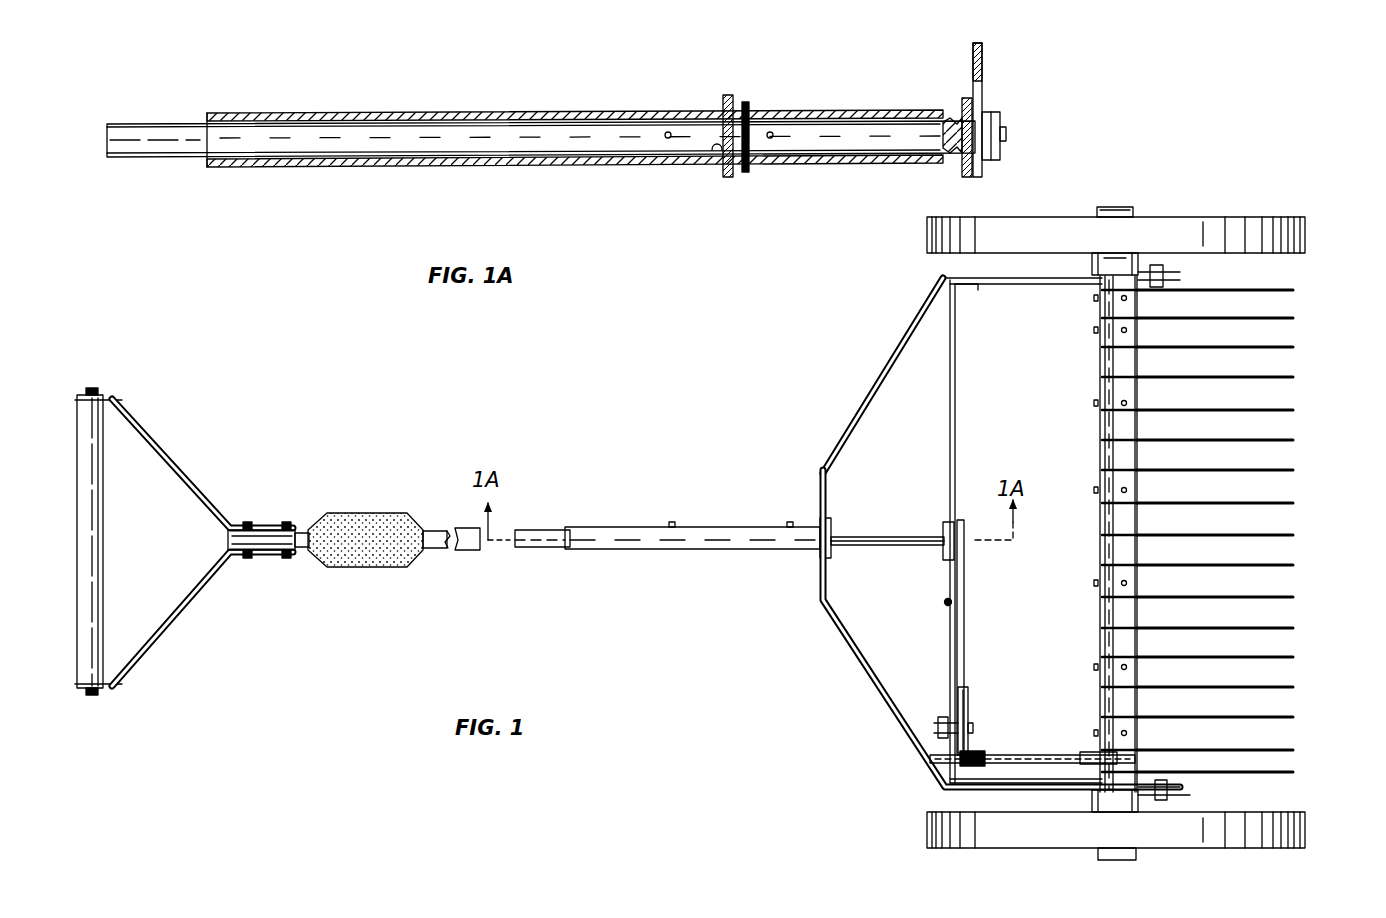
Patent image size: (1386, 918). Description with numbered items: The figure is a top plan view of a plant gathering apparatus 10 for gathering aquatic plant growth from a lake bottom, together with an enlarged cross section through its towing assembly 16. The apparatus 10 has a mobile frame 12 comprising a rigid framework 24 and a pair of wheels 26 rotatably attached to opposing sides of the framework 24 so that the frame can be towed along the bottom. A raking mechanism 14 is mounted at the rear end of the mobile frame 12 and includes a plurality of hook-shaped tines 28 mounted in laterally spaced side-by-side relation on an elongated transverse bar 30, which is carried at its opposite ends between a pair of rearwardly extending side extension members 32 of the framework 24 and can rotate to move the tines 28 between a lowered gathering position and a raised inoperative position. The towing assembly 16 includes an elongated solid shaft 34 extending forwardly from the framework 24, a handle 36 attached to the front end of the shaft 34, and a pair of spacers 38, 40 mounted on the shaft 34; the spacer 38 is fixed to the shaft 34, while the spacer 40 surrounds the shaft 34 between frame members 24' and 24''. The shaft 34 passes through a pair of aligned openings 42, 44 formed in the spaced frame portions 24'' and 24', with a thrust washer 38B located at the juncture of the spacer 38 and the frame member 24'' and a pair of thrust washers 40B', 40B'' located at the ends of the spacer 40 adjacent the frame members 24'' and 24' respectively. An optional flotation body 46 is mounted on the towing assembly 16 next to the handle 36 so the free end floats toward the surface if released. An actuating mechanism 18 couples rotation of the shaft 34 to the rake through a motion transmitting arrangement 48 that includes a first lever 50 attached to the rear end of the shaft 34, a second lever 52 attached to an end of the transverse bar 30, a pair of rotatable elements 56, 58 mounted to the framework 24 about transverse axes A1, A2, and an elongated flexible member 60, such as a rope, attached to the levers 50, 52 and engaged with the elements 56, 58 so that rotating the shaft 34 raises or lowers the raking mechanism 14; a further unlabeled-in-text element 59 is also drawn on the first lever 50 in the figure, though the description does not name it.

In FIG. 1, the plant gathering apparatus 10 is at (1172, 195).
In FIG. 1, the mobile frame 12 is at (868, 680).
In FIG. 1, the raking mechanism 14 is at (1082, 436).
In FIG. 1A, the towing assembly 16 is at (445, 170).
In FIG. 1, the towing assembly 16 is at (700, 560).
In FIG. 1, the actuating mechanism 18 is at (1008, 706).
In FIG. 1, the rigid framework 24 is at (1003, 530).
In FIG. 1A, the frame member 24' is at (1014, 191).
In FIG. 1, the frame member 24' is at (986, 381).
In FIG. 1A, the frame member 24'' is at (711, 214).
In FIG. 1, the frame member 24'' is at (883, 375).
In FIG. 1, the wheels 26 is at (1270, 228).
In FIG. 1, the tines 28 is at (1293, 290).
In FIG. 1, the transverse bar 30 is at (1125, 388).
In FIG. 1, the side extension members 32 is at (1148, 265).
In FIG. 1A, the elongated solid shaft 34 is at (290, 155).
In FIG. 1, the elongated solid shaft 34 is at (470, 551).
In FIG. 1, the handle 36 is at (95, 498).
In FIG. 1A, the spacer 38 is at (578, 111).
In FIG. 1, the spacer 38 is at (718, 525).
In FIG. 1A, the thrust washer 38B is at (724, 99).
In FIG. 1, the thrust washer 38B is at (820, 555).
In FIG. 1A, the spacer 40 is at (865, 168).
In FIG. 1, the spacer 40 is at (891, 552).
In FIG. 1A, the thrust washer 40B' is at (780, 164).
In FIG. 1, the thrust washer 40B' is at (878, 488).
In FIG. 1A, the thrust washer 40B'' is at (932, 109).
In FIG. 1, the thrust washer 40B'' is at (912, 524).
In FIG. 1A, the opening 42 is at (712, 152).
In FIG. 1A, the opening 44 is at (960, 162).
In FIG. 1, the flotation body 46 is at (355, 522).
In FIG. 1, the motion transmitting arrangement 48 is at (983, 655).
In FIG. 1A, the first lever 50 is at (983, 66).
In FIG. 1, the first lever 50 is at (965, 560).
In FIG. 1, the second lever 52 is at (1032, 729).
In FIG. 1, the rotatable element 56 is at (968, 703).
In FIG. 1, the rotatable element 58 is at (978, 758).
In FIG. 1, the pivot 59 is at (945, 603).
In FIG. 1, the elongated flexible member 60 is at (1027, 679).
In FIG. 1, the axis A1 is at (940, 718).
In FIG. 1, the axis A2 is at (975, 766).